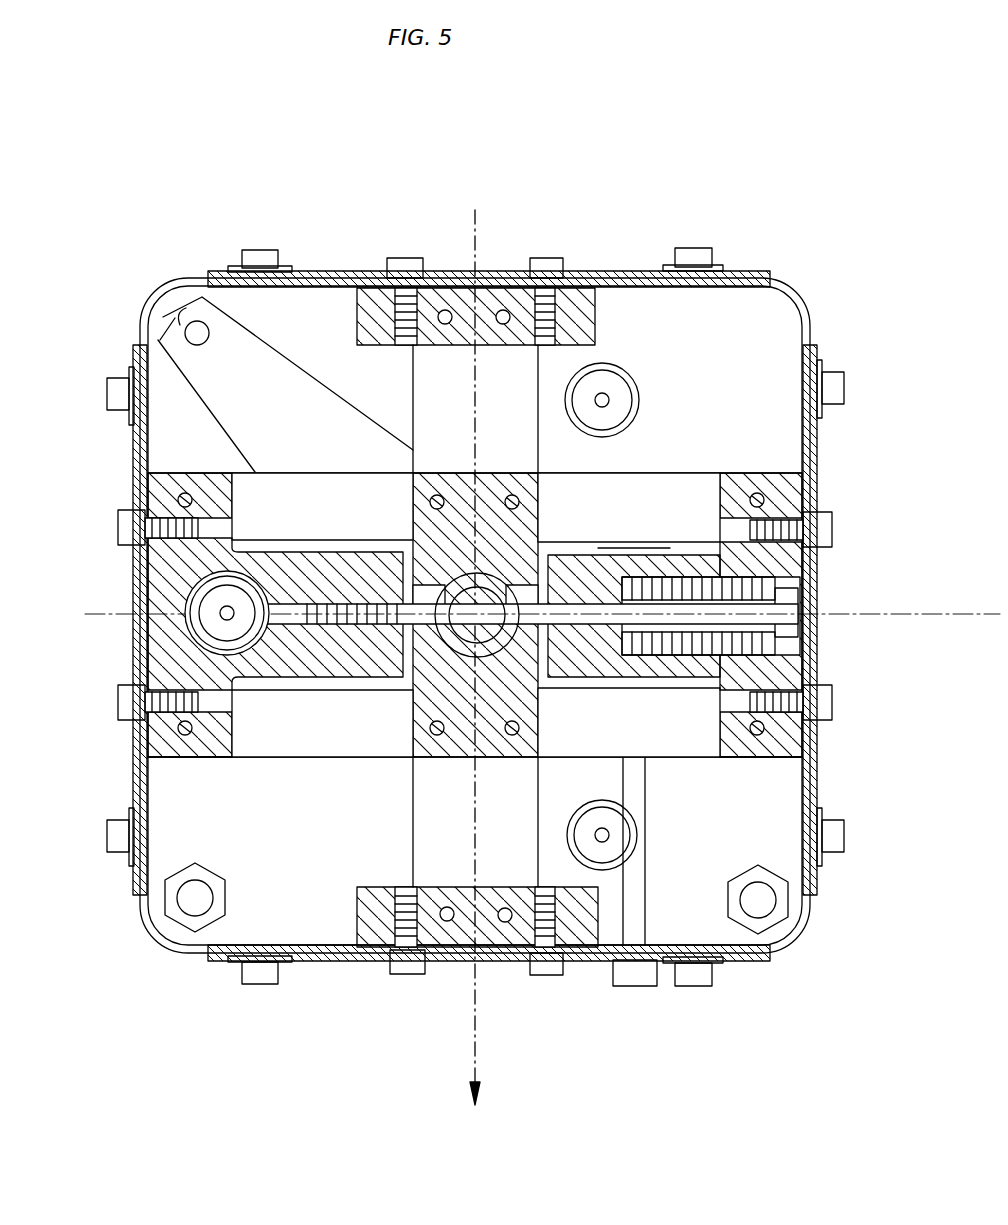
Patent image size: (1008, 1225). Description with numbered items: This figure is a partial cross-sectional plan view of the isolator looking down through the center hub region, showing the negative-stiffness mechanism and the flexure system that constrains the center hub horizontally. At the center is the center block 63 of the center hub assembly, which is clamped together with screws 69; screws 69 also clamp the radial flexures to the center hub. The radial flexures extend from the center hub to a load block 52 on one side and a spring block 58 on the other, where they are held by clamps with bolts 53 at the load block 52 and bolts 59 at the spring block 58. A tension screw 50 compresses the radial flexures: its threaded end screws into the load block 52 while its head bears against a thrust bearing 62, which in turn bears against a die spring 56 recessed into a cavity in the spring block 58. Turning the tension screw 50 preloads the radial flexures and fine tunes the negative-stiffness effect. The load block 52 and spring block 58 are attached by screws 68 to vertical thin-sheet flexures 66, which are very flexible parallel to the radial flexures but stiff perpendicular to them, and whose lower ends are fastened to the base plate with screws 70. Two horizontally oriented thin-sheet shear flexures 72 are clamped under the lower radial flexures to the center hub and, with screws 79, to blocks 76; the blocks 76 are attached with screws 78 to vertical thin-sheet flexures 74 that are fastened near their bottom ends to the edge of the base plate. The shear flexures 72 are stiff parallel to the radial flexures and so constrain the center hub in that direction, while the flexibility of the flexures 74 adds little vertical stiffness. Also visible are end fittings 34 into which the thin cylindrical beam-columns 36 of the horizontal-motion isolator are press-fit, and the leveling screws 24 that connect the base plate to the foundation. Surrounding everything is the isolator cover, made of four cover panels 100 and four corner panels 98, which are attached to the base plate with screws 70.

The leveling screws 24 is at (190, 898).
The end fittings 34 is at (205, 608).
The flexible beam-columns 36 is at (232, 622).
The tension screw 50 is at (795, 625).
The load block 52 is at (148, 665).
The bolts 53 is at (175, 498).
The die spring 56 is at (705, 655).
The spring block 58 is at (790, 555).
The bolts 59 is at (780, 485).
The thrust bearing 62 is at (800, 598).
The center block 63 is at (408, 760).
The vertical thin-sheet flexures 66 is at (178, 760).
The screws 68 is at (118, 526).
The screws 69 is at (518, 495).
The screws 70 is at (258, 255).
The thin-sheet shear flexures 72 is at (432, 388).
The vertical thin-sheet flexures 74 is at (352, 287).
The blocks 76 is at (480, 290).
The screws 78 is at (405, 268).
The screws 79 is at (445, 310).
The corner panels 98 is at (152, 290).
The cover panels 100 is at (660, 272).